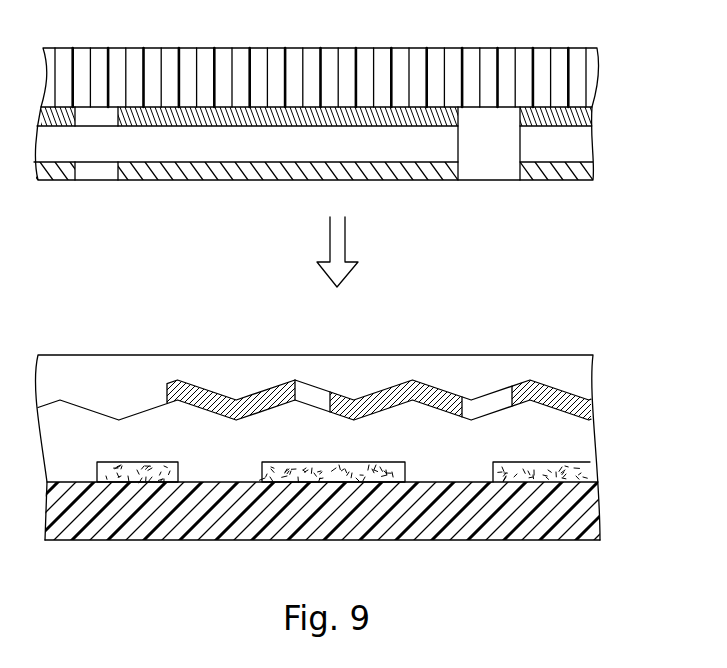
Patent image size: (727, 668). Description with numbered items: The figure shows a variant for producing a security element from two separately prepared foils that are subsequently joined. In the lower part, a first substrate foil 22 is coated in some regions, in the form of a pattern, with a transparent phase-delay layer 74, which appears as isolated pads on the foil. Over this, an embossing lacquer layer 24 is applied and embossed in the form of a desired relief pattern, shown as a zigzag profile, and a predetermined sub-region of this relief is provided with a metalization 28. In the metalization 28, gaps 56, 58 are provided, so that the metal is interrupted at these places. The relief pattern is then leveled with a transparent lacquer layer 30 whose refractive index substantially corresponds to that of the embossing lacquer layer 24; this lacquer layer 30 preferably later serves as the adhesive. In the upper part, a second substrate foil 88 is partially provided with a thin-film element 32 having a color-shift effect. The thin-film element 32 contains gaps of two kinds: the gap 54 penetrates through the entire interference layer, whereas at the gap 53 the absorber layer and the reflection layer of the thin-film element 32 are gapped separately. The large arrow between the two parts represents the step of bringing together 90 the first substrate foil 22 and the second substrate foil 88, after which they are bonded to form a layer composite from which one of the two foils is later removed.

The first substrate foil 22 is at (585, 512).
The embossing lacquer layer 24 is at (578, 438).
The metalization 28 is at (588, 405).
The transparent lacquer layer 30 is at (573, 376).
The thin-film element 32 is at (610, 107).
The gap 53 is at (103, 173).
The gap 54 is at (490, 170).
The gap 56 is at (488, 395).
The gap 58 is at (312, 397).
The transparent phase-delay layer 74 is at (577, 470).
The second substrate foil 88 is at (592, 80).
The bringing together 90 is at (346, 236).